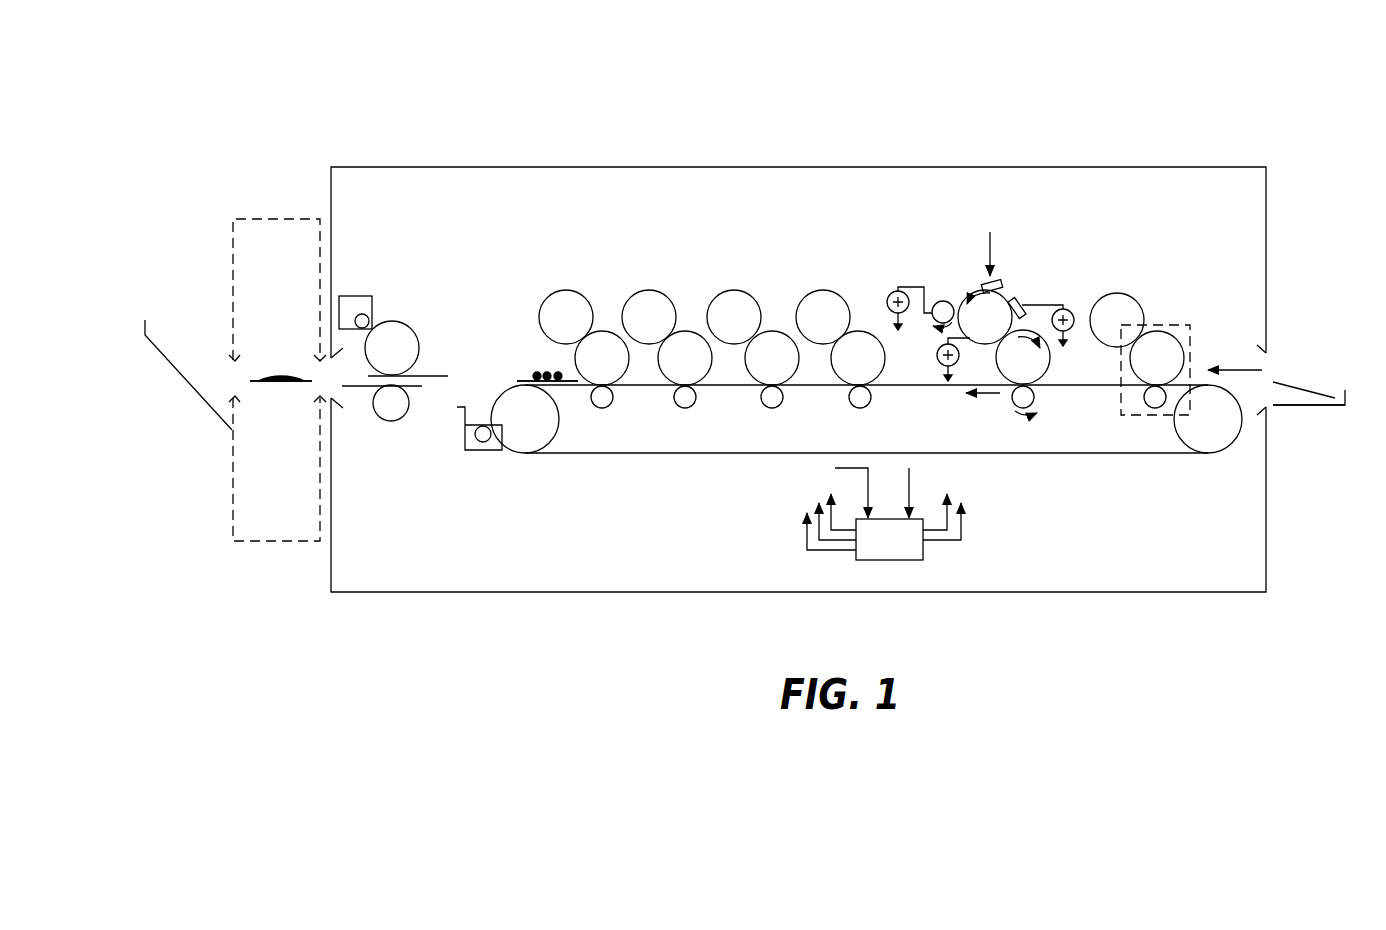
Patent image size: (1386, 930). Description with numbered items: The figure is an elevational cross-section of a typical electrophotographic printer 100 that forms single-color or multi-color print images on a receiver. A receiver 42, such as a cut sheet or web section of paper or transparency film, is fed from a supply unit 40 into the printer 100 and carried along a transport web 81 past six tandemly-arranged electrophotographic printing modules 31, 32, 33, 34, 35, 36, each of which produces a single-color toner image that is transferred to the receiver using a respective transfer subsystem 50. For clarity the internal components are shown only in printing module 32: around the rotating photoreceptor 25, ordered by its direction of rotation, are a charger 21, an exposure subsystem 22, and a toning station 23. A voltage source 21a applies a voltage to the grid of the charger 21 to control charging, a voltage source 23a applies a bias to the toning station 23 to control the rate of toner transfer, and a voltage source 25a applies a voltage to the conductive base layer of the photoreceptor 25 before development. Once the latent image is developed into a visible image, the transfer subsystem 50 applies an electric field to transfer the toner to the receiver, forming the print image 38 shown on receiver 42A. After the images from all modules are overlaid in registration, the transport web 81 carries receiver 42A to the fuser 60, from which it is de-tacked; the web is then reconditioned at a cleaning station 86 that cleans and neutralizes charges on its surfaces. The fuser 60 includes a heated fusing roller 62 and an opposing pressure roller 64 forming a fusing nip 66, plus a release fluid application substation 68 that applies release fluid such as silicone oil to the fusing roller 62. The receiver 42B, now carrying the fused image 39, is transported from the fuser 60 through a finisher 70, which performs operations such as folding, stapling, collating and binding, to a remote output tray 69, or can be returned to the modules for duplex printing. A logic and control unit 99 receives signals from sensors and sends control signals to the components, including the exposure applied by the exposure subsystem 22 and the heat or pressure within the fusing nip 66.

The electrophotographic printer 100 is at (1006, 114).
The finisher 70 is at (263, 541).
The output tray 69 is at (178, 373).
The fused image 39 is at (283, 374).
The receiver 42B is at (307, 386).
The fuser 60 is at (412, 297).
The release fluid application substation 68 is at (342, 296).
The fusing roller 62 is at (420, 345).
The pressure roller 64 is at (391, 421).
The fusing nip 66 is at (422, 383).
The transport web 81 is at (1092, 455).
The cleaning station 86 is at (472, 450).
The print image 38 is at (547, 371).
The receiver 42A is at (553, 383).
The printing module 36 is at (565, 281).
The printing module 35 is at (648, 281).
The printing module 34 is at (733, 281).
The printing module 33 is at (822, 281).
The printing module 32 is at (939, 247).
The printing module 31 is at (1116, 289).
The toning station 23 is at (943, 301).
The voltage source 23a is at (896, 291).
The exposure subsystem 22 is at (1000, 282).
The charger 21 is at (1020, 300).
The voltage source 21a is at (1066, 333).
The photoreceptor 25 is at (970, 340).
The voltage source 25a is at (941, 380).
The transfer subsystem 50 is at (1158, 416).
The receiver 42 is at (1325, 395).
The supply unit 40 is at (1307, 422).
The logic and control unit 99 is at (900, 560).